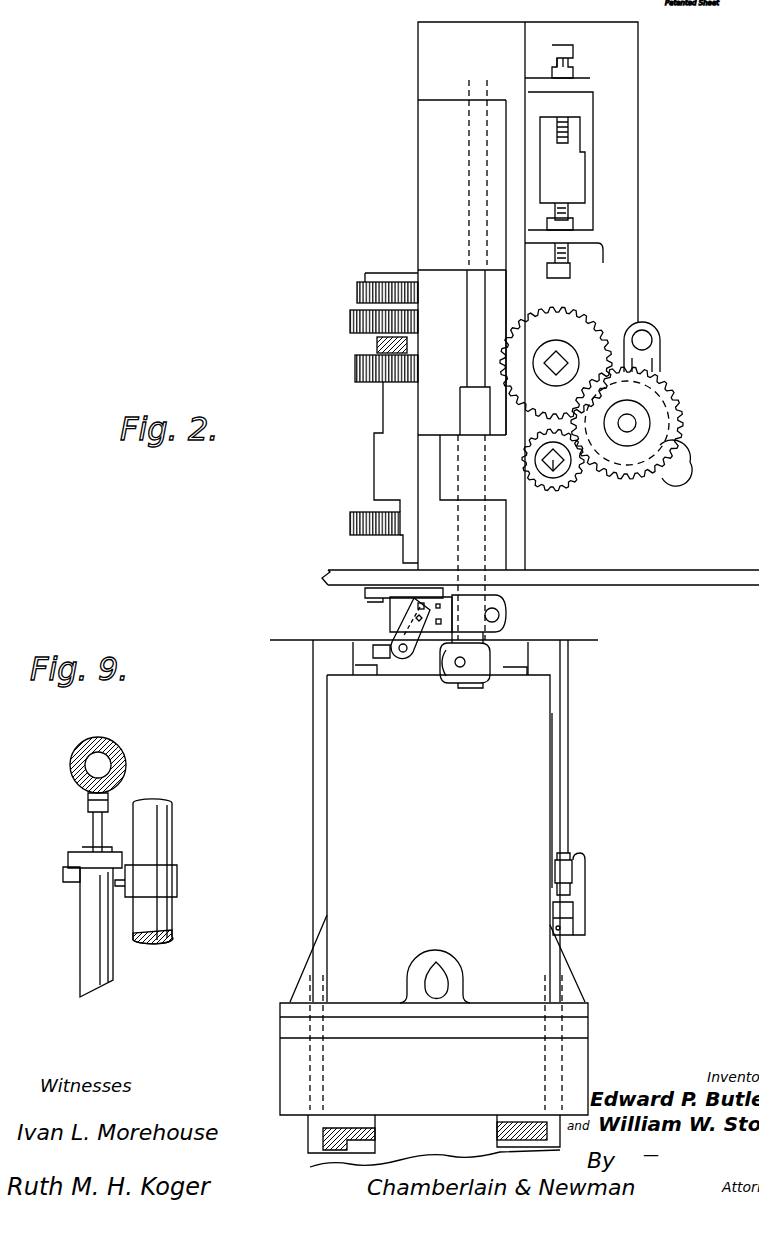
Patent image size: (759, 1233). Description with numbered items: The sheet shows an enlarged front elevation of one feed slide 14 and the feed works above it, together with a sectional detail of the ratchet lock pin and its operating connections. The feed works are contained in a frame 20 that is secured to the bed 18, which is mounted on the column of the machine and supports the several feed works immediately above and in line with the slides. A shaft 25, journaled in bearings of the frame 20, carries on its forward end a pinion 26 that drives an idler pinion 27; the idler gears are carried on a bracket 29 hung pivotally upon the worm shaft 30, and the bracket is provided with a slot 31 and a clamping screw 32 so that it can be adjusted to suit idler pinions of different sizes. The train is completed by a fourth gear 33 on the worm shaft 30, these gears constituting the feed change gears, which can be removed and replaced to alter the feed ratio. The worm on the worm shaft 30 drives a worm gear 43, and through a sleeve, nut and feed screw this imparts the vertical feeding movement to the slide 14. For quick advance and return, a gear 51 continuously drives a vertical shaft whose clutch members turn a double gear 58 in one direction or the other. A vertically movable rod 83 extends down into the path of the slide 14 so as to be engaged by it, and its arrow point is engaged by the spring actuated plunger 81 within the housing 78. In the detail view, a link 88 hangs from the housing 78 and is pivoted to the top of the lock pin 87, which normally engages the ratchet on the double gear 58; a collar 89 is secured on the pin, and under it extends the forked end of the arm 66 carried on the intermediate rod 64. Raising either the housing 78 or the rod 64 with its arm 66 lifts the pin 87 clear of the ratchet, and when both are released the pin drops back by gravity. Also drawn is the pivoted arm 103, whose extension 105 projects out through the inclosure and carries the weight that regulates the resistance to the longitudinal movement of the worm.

In FIG. 2, the feed slide 14 is at (434, 903).
In FIG. 2, the bed 18 is at (328, 568).
In FIG. 2, the frame 20 is at (418, 118).
In FIG. 2, the shaft 25 is at (557, 478).
In FIG. 2, the pinion 26 is at (578, 480).
In FIG. 2, the idler pinion 27 is at (672, 412).
In FIG. 2, the bracket 29 is at (663, 362).
In FIG. 2, the worm shaft 30 is at (572, 347).
In FIG. 2, the slot 31 is at (646, 366).
In FIG. 2, the clamping screw 32 is at (641, 338).
In FIG. 2, the fourth gear 33 is at (513, 356).
In FIG. 2, the worm gear 43 is at (355, 363).
In FIG. 2, the gear 51 is at (360, 514).
In FIG. 2, the double gear 58 is at (357, 296).
In FIG. 9, the intermediate rod 64 is at (170, 826).
In FIG. 9, the arm 66 is at (178, 882).
In FIG. 9, the housing 78 is at (122, 758).
In FIG. 9, the spring actuated plunger 81 is at (80, 763).
In FIG. 2, the vertically movable rod 83 is at (467, 292).
In FIG. 9, the lock pin 87 is at (80, 931).
In FIG. 9, the link 88 is at (93, 826).
In FIG. 9, the collar 89 is at (68, 858).
In FIG. 2, the arm 103 is at (547, 196).
In FIG. 2, the extension 105 is at (580, 180).